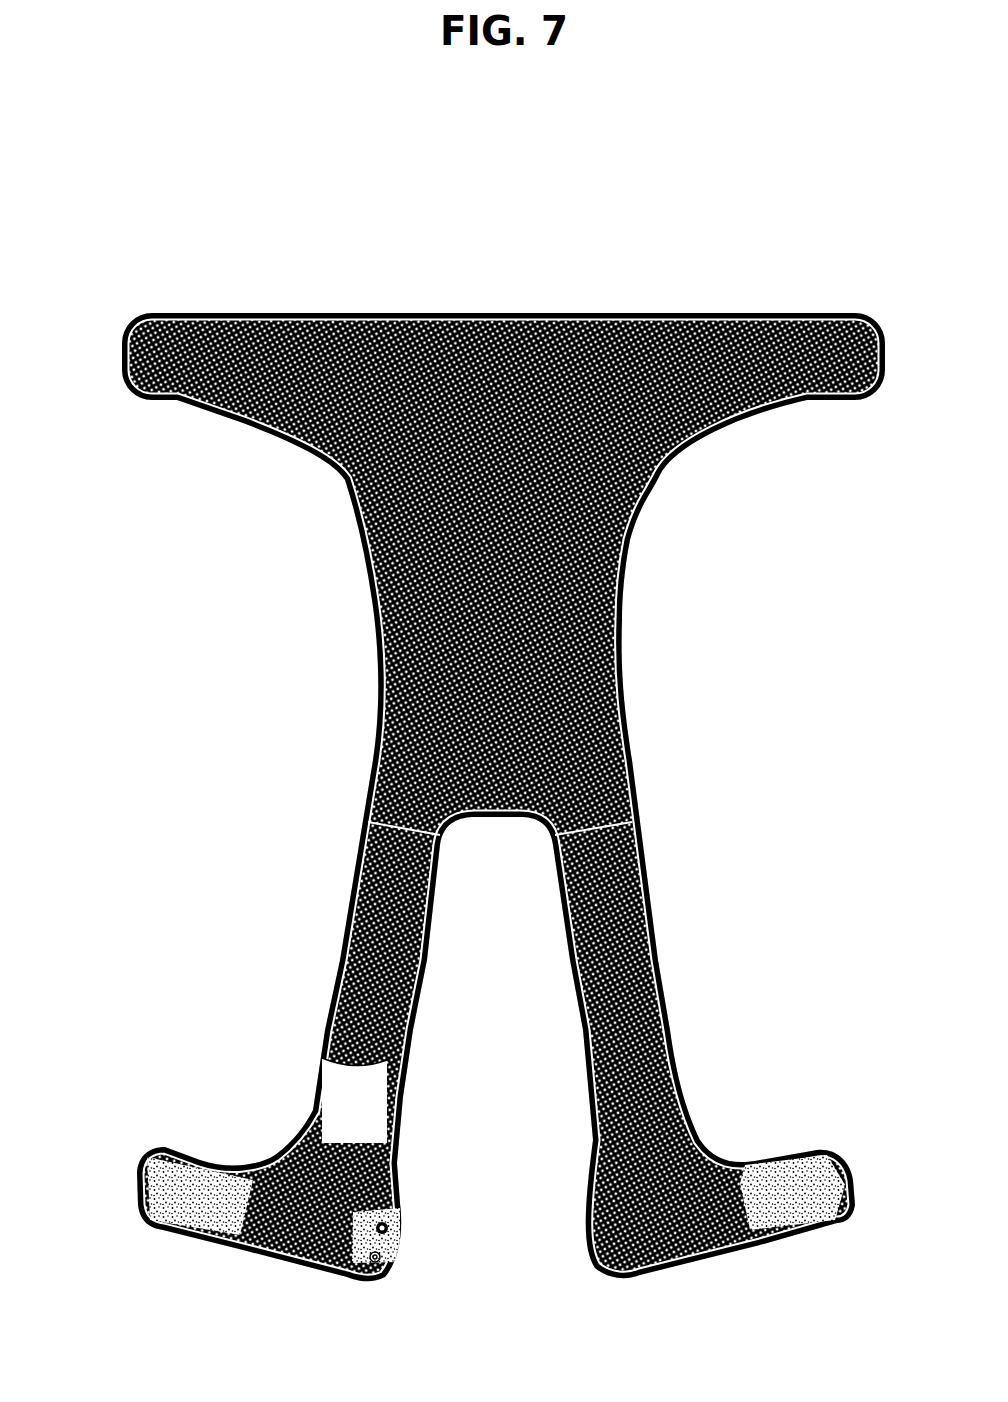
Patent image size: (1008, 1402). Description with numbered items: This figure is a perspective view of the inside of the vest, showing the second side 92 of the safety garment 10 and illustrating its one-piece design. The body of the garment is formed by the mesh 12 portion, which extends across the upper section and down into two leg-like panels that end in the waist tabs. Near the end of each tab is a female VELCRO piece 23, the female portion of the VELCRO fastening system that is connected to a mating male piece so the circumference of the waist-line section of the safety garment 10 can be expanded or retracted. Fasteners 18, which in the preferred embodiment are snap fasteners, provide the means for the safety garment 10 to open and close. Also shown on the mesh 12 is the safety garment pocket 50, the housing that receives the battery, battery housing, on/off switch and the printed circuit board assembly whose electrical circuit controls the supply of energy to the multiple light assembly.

The safety garment 10 is at (489, 797).
The mesh portion 12 is at (633, 560).
The second side 92 is at (648, 489).
The safety garment pocket 50 is at (345, 1099).
The female VELCRO piece 23 is at (165, 1185).
The fasteners 18 is at (392, 1222).